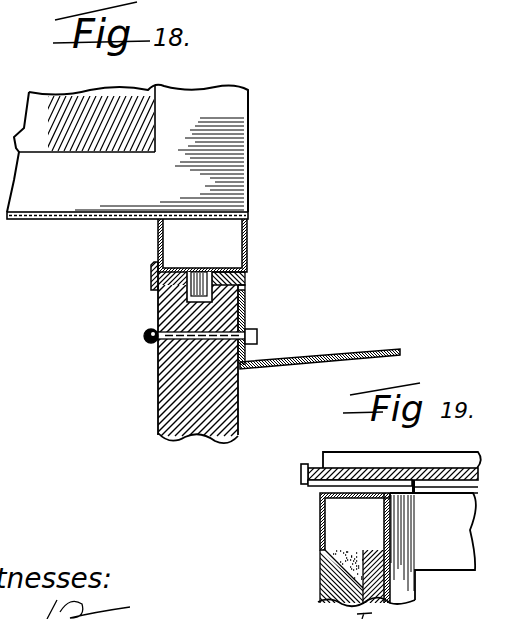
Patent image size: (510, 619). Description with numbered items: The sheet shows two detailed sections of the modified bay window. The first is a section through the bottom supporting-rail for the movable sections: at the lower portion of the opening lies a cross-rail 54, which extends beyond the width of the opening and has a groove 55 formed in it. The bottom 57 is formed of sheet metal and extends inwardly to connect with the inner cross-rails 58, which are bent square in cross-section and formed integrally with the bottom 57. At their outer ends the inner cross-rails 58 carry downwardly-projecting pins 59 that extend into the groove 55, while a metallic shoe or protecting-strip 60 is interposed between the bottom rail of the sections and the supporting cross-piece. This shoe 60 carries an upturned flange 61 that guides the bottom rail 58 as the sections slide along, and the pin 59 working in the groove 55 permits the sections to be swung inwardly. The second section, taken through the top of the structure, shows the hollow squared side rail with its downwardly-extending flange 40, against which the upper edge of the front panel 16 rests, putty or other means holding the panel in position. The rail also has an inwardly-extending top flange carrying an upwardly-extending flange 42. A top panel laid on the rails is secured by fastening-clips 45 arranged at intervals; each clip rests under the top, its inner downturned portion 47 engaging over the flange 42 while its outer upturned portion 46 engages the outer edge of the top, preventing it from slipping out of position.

In FIG. 19, the front panel 16 is at (372, 596).
In FIG. 19, the downwardly-extending flange 40 is at (388, 568).
In FIG. 19, the upwardly-extending flange 42 is at (320, 493).
In FIG. 19, the fastening-clips 45 is at (378, 484).
In FIG. 19, the upturned portion 46 is at (303, 467).
In FIG. 19, the downturned portion 47 is at (428, 480).
In FIG. 18, the cross-rail 54 is at (229, 405).
In FIG. 18, the groove 55 is at (183, 290).
In FIG. 18, the bottom 57 is at (58, 219).
In FIG. 19, the bottom 57 is at (321, 528).
In FIG. 18, the inner cross-rails 58 is at (243, 242).
In FIG. 18, the downwardly-projecting pins 59 is at (190, 283).
In FIG. 18, the metallic shoe 60 is at (243, 283).
In FIG. 18, the upturned flange 61 is at (152, 265).